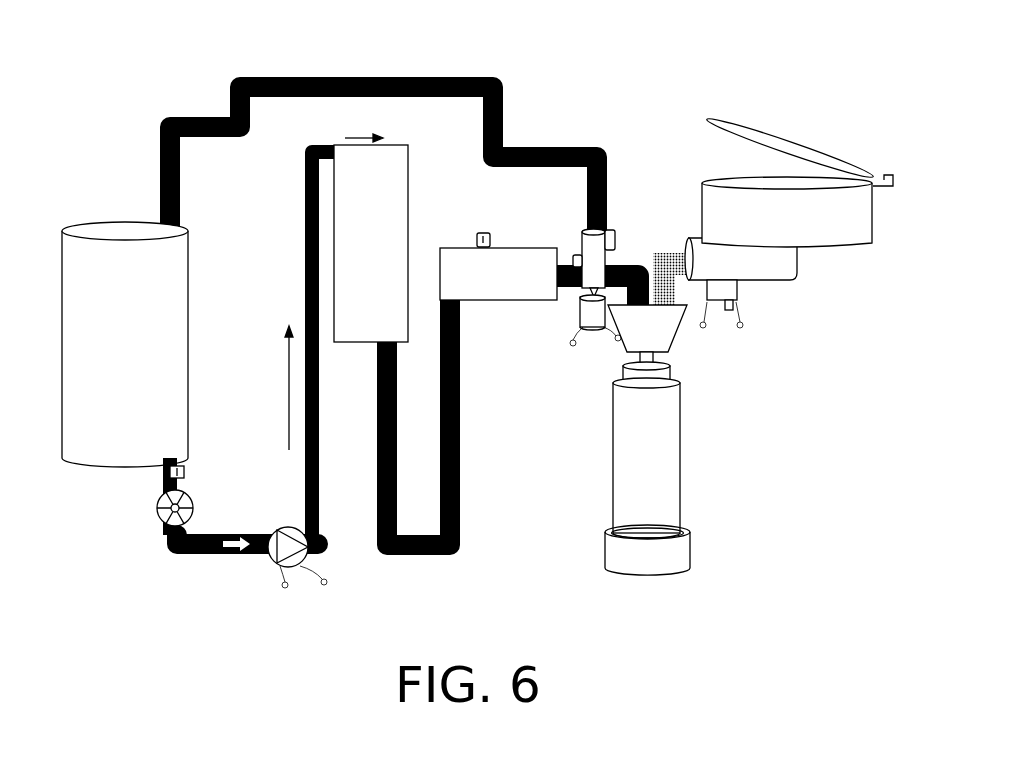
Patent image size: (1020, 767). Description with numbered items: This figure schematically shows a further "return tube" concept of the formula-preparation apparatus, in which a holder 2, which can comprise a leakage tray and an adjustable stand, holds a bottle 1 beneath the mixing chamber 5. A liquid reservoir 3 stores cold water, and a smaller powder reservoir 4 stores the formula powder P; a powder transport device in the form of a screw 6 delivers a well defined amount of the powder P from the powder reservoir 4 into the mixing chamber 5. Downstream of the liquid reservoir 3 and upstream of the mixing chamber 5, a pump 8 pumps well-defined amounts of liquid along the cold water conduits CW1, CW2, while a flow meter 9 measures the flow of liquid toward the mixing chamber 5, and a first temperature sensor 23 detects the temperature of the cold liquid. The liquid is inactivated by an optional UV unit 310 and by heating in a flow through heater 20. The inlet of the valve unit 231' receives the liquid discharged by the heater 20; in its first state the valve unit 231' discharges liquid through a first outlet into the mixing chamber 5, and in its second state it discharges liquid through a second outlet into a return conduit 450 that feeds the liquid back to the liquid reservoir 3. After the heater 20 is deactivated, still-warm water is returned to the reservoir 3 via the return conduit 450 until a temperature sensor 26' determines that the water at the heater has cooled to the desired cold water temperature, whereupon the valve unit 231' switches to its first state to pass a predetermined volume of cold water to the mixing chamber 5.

The bottle 1 is at (652, 473).
The holder 2 is at (683, 548).
The liquid reservoir 3 is at (111, 324).
The powder reservoir 4 is at (768, 231).
The mixing chamber 5 is at (663, 335).
The screw 6 is at (772, 267).
The pump 8 is at (293, 565).
The flow meter 9 is at (163, 519).
The flow through heater 20 is at (478, 285).
The first temperature sensor 23 is at (187, 472).
The temperature sensor 26' is at (478, 212).
The valve unit 231' is at (566, 253).
The UV unit 310 is at (354, 225).
The return conduit 450 is at (378, 77).
The formula powder P is at (667, 253).
The cold water conduit CW1 is at (202, 557).
The cold water conduit CW2 is at (417, 557).